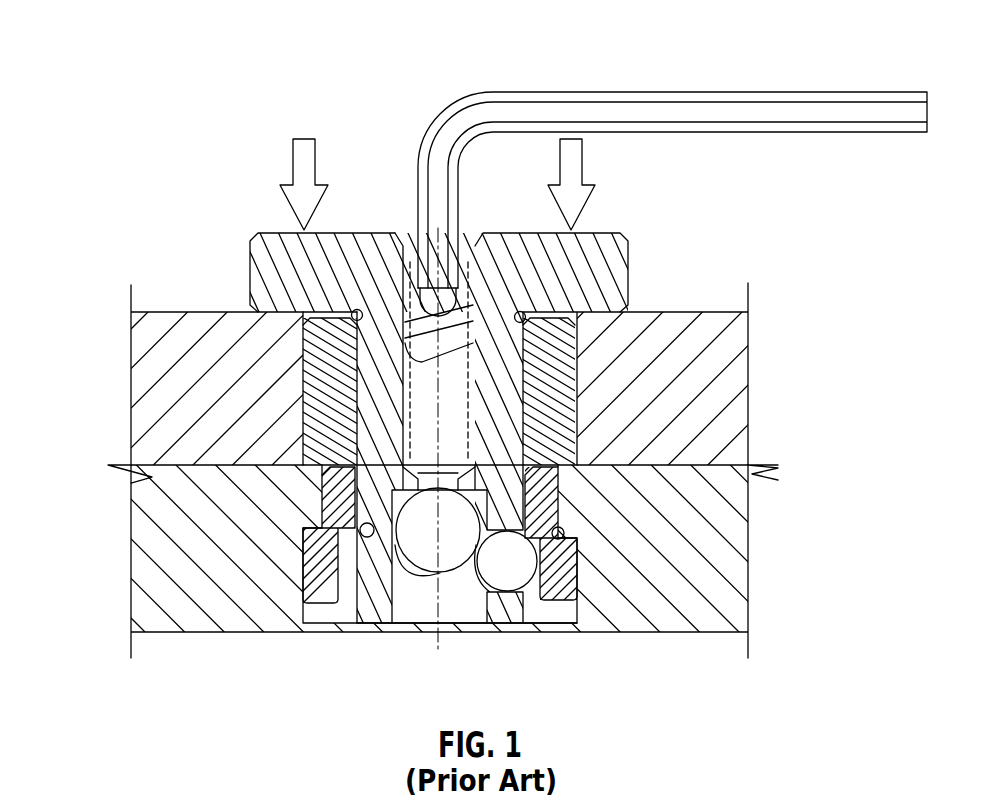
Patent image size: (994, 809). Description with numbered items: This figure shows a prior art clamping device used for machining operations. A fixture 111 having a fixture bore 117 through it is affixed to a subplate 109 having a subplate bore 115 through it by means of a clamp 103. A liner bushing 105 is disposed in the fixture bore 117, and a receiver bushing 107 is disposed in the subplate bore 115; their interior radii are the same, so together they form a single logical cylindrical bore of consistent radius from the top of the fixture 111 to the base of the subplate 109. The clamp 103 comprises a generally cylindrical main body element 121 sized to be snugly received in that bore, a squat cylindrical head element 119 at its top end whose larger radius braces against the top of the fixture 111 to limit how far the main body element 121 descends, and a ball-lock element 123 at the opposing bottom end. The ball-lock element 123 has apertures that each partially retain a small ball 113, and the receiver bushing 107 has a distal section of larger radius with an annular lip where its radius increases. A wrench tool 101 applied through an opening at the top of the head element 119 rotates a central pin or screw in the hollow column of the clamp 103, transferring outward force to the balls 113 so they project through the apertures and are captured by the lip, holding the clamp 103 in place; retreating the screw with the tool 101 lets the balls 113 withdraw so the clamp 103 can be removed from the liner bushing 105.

The wrench tool 101 is at (868, 92).
The clamp 103 is at (588, 278).
The liner bushing 105 is at (556, 373).
The receiver bushing 107 is at (564, 503).
The subplate 109 is at (720, 598).
The fixture 111 is at (718, 401).
The ball 113 is at (510, 567).
The subplate bore 115 is at (320, 528).
The fixture bore 117 is at (303, 420).
The head element 119 is at (263, 260).
The main body element 121 is at (367, 372).
The ball-lock element 123 is at (453, 593).